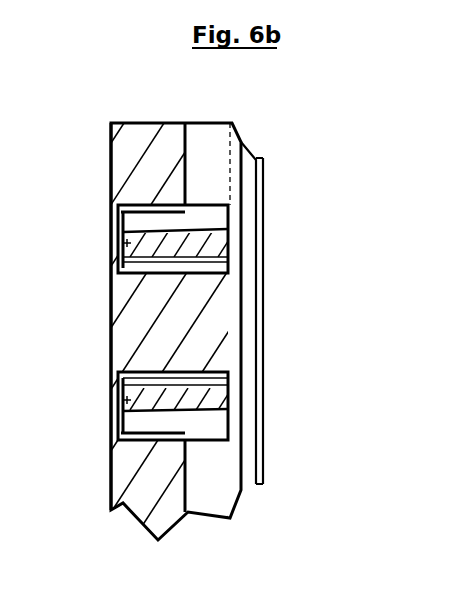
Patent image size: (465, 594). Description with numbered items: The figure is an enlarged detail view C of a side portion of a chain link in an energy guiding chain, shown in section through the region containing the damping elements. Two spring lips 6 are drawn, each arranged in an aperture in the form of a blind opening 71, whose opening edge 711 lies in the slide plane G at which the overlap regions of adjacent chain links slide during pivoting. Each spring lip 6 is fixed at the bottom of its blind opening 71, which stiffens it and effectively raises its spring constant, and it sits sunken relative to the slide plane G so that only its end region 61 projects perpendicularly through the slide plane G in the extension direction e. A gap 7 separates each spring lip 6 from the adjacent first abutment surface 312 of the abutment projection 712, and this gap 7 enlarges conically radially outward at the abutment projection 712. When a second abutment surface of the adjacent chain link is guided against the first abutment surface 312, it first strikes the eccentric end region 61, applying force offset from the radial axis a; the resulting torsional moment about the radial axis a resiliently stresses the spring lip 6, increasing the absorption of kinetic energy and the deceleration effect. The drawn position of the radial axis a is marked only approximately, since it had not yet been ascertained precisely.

The end region 61 is at (185, 111).
The detail view C is at (268, 119).
The opening edge 711 is at (185, 208).
The blind opening 71 is at (114, 221).
The radial axis a is at (124, 241).
The gap 7 is at (125, 262).
The abutment projection 712 is at (107, 316).
The spring lip 6 is at (213, 241).
The first abutment surface 312 is at (205, 269).
The extension direction e is at (337, 333).
The slide plane G is at (191, 466).